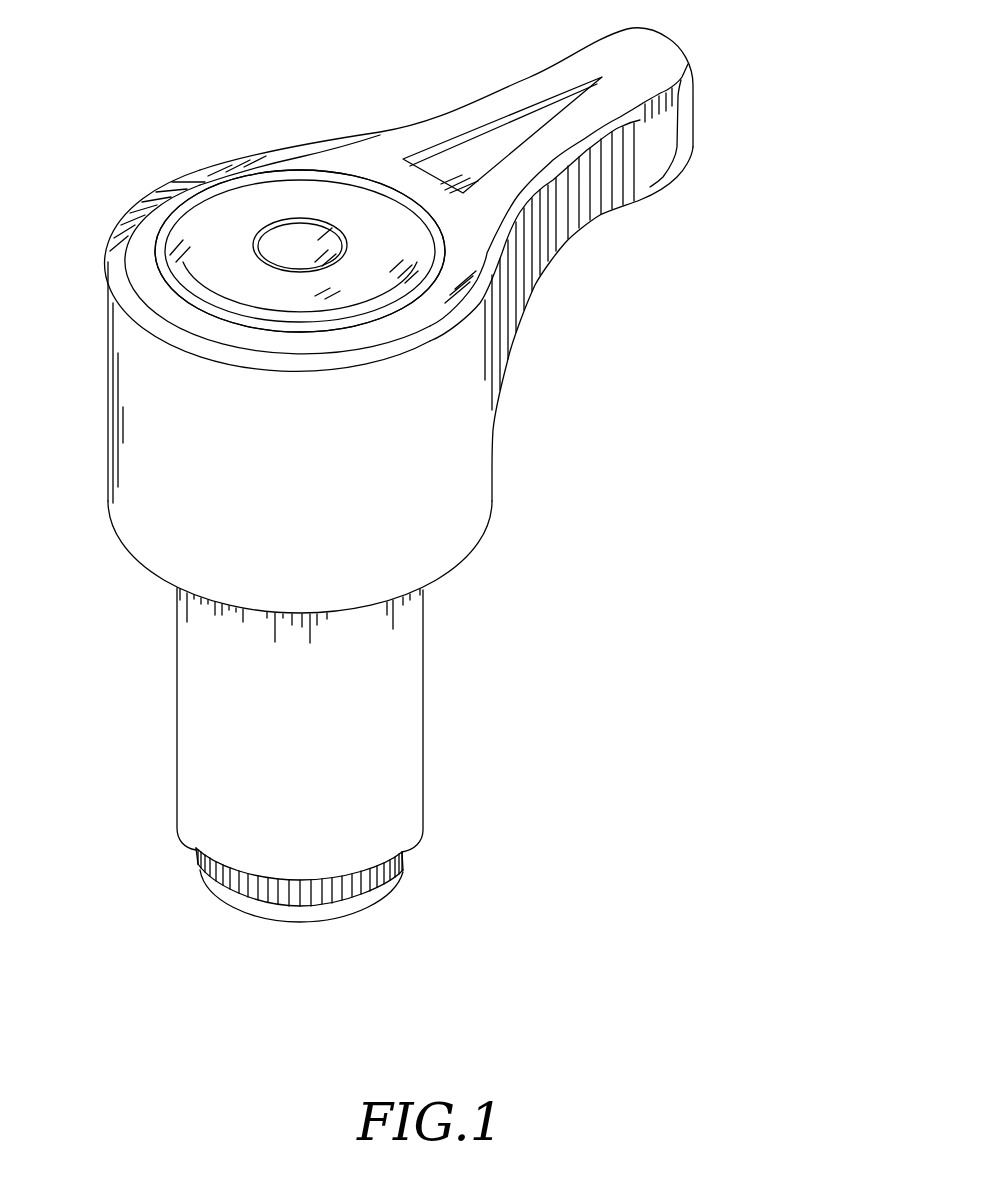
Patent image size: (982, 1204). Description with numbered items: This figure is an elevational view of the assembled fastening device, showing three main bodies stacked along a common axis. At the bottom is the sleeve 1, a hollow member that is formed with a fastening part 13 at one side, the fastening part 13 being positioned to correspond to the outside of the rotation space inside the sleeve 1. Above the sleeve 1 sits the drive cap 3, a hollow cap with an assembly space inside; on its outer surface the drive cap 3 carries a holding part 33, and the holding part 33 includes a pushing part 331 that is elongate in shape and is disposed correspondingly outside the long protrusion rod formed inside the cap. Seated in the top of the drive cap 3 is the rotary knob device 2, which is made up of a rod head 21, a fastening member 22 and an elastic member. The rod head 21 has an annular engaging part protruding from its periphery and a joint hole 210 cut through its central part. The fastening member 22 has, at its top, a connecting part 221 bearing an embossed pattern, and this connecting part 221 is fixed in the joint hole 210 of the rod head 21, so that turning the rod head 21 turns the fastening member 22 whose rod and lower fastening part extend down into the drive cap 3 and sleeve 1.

The sleeve 1 is at (449, 712).
The fastening part 13 is at (242, 882).
The rotary knob device 2 is at (155, 110).
The rod head 21 is at (220, 232).
The joint hole 210 is at (272, 227).
The fastening member 22 is at (343, 75).
The connecting part 221 is at (298, 247).
The drive cap 3 is at (138, 432).
The holding part 33 is at (760, 30).
The pushing part 331 is at (647, 58).